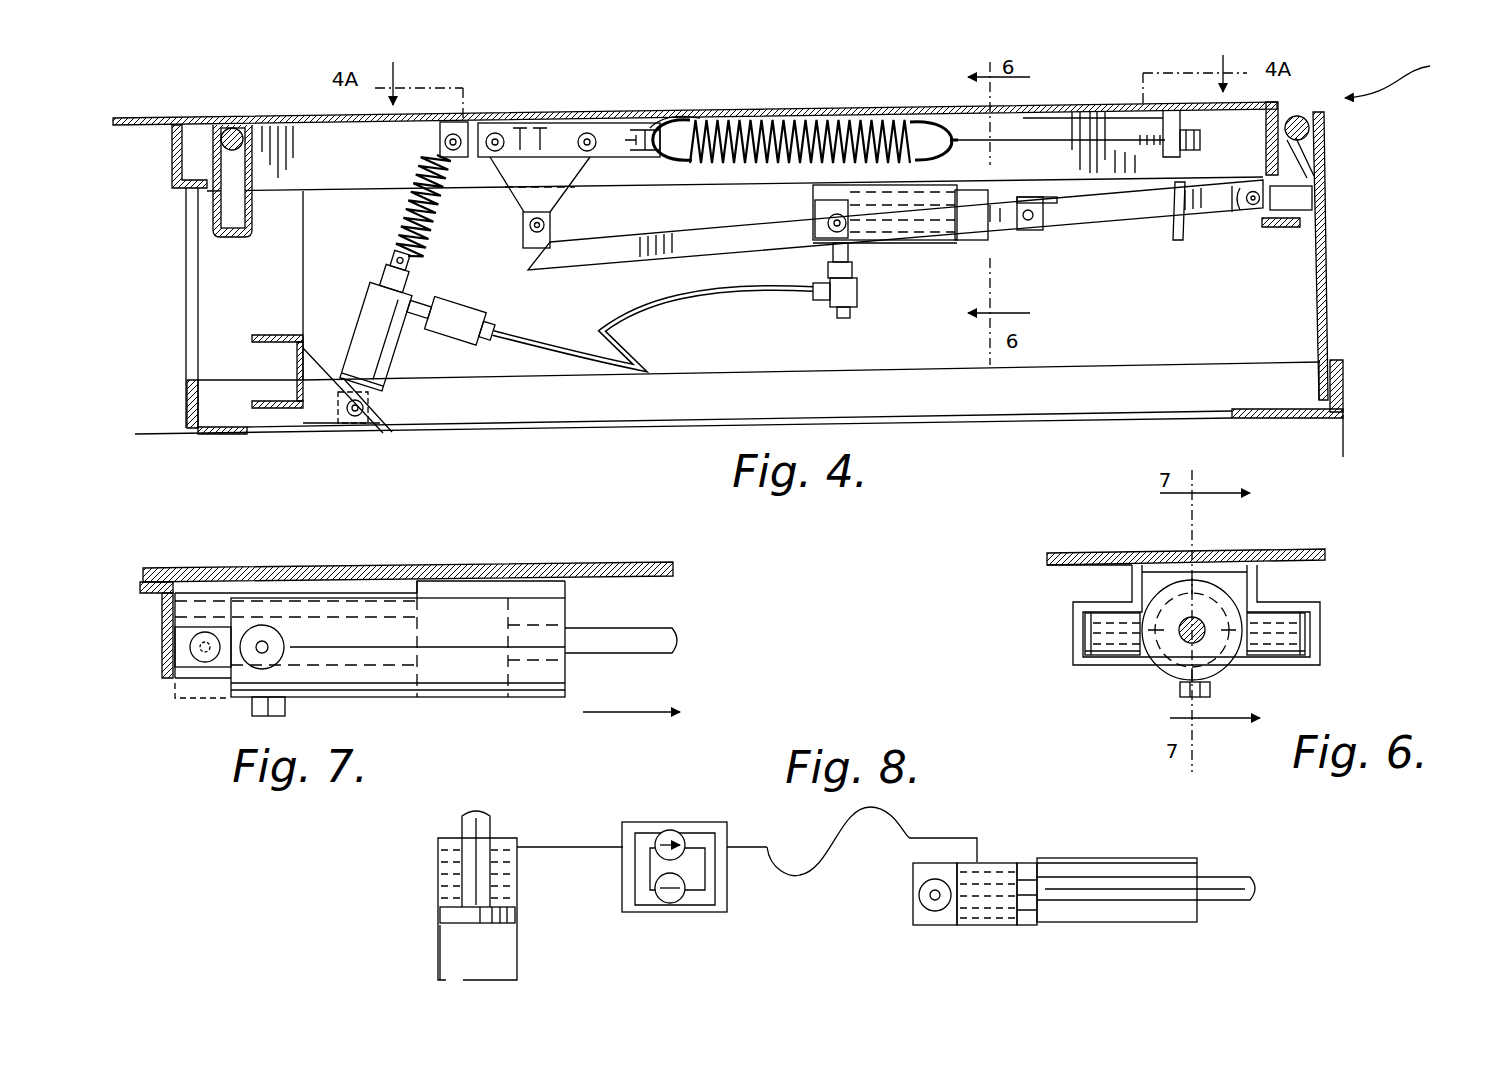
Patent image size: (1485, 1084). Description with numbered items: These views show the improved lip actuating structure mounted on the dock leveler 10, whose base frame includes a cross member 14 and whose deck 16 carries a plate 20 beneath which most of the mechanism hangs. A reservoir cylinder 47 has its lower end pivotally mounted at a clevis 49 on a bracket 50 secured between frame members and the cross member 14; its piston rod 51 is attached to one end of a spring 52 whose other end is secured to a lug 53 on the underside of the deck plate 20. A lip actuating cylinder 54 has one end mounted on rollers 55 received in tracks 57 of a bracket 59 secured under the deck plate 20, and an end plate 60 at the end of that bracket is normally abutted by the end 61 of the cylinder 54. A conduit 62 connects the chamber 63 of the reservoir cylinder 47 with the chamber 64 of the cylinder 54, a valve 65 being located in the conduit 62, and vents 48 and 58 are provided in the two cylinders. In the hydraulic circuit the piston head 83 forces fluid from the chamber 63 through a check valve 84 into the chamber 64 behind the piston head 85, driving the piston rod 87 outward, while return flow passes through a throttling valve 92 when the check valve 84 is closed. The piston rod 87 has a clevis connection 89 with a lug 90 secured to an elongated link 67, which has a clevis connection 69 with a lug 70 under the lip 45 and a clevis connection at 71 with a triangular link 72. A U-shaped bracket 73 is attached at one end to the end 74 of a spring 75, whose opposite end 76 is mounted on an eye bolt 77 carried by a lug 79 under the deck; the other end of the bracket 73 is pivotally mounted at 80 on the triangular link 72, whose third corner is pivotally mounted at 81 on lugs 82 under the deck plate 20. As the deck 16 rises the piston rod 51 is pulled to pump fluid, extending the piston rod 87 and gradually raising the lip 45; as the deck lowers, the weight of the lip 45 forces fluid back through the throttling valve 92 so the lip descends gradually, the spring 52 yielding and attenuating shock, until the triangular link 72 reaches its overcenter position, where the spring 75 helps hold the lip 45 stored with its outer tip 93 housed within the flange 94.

In FIG. 4, the dock leveler 10 is at (1406, 73).
In FIG. 4, the cross member 14 is at (266, 332).
In FIG. 4, the deck 16 is at (776, 112).
In FIG. 7, the deck 16 is at (644, 562).
In FIG. 6, the deck 16 is at (1312, 549).
In FIG. 4, the deck plate 20 is at (830, 108).
In FIG. 7, the deck plate 20 is at (292, 568).
In FIG. 6, the deck plate 20 is at (1088, 554).
In FIG. 4, the lip 45 is at (1328, 238).
In FIG. 4, the reservoir cylinder 47 is at (371, 300).
In FIG. 8, the reservoir cylinder 47 is at (438, 885).
In FIG. 4, the vent 48 is at (358, 372).
In FIG. 8, the vent 48 is at (460, 982).
In FIG. 4, the clevis 49 is at (372, 406).
In FIG. 4, the bracket 50 is at (322, 423).
In FIG. 4, the piston rod 51 is at (400, 253).
In FIG. 8, the piston rod 51 is at (490, 825).
In FIG. 4, the spring 52 is at (405, 215).
In FIG. 4, the lug 53 is at (440, 142).
In FIG. 4, the lip actuating cylinder 54 is at (885, 212).
In FIG. 7, the lip actuating cylinder 54 is at (512, 600).
In FIG. 6, the lip actuating cylinder 54 is at (1160, 670).
In FIG. 8, the lip actuating cylinder 54 is at (1120, 922).
In FIG. 4, the rollers 55 is at (826, 250).
In FIG. 7, the rollers 55 is at (284, 645).
In FIG. 6, the rollers 55 is at (1105, 615).
In FIG. 8, the rollers 55 is at (935, 912).
In FIG. 4, the tracks 57 is at (815, 205).
In FIG. 7, the tracks 57 is at (174, 645).
In FIG. 6, the tracks 57 is at (1073, 655).
In FIG. 8, the vent 58 is at (1165, 858).
In FIG. 4, the bracket 59 is at (915, 243).
In FIG. 7, the bracket 59 is at (198, 572).
In FIG. 6, the bracket 59 is at (1257, 572).
In FIG. 7, the end plate 60 is at (176, 655).
In FIG. 6, the end plate 60 is at (1220, 575).
In FIG. 7, the cylinder end 61 is at (232, 698).
In FIG. 4, the conduit 62 is at (662, 316).
In FIG. 8, the conduit 62 is at (835, 862).
In FIG. 8, the chamber 63 is at (445, 855).
In FIG. 8, the chamber 64 is at (990, 912).
In FIG. 4, the valve 65 is at (460, 332).
In FIG. 8, the valve 65 is at (628, 822).
In FIG. 4, the elongated link 67 is at (1185, 240).
In FIG. 4, the clevis connection 69 is at (1250, 208).
In FIG. 4, the lug 70 is at (1313, 192).
In FIG. 4, the clevis connection 71 is at (523, 225).
In FIG. 4, the triangular link 72 is at (556, 198).
In FIG. 4, the U-shaped bracket 73 is at (566, 150).
In FIG. 4, the spring end 74 is at (676, 162).
In FIG. 4, the spring 75 is at (186, 247).
In FIG. 4, the spring end 76 is at (932, 120).
In FIG. 4, the eye bolt 77 is at (232, 122).
In FIG. 4, the lug 79 is at (1162, 157).
In FIG. 4, the pivot 80 is at (500, 125).
In FIG. 4, the pivot 81 is at (590, 128).
In FIG. 4, the lugs 82 is at (626, 128).
In FIG. 8, the piston head 83 is at (450, 925).
In FIG. 8, the check valve 84 is at (685, 830).
In FIG. 8, the piston head 85 is at (1025, 863).
In FIG. 7, the piston rod 87 is at (660, 630).
In FIG. 6, the piston rod 87 is at (1205, 643).
In FIG. 8, the piston rod 87 is at (1232, 877).
In FIG. 4, the clevis connection 89 is at (1043, 228).
In FIG. 4, the lug 90 is at (1043, 186).
In FIG. 8, the throttling valve 92 is at (688, 900).
In FIG. 4, the outer tip 93 is at (1318, 388).
In FIG. 4, the flange 94 is at (1345, 386).